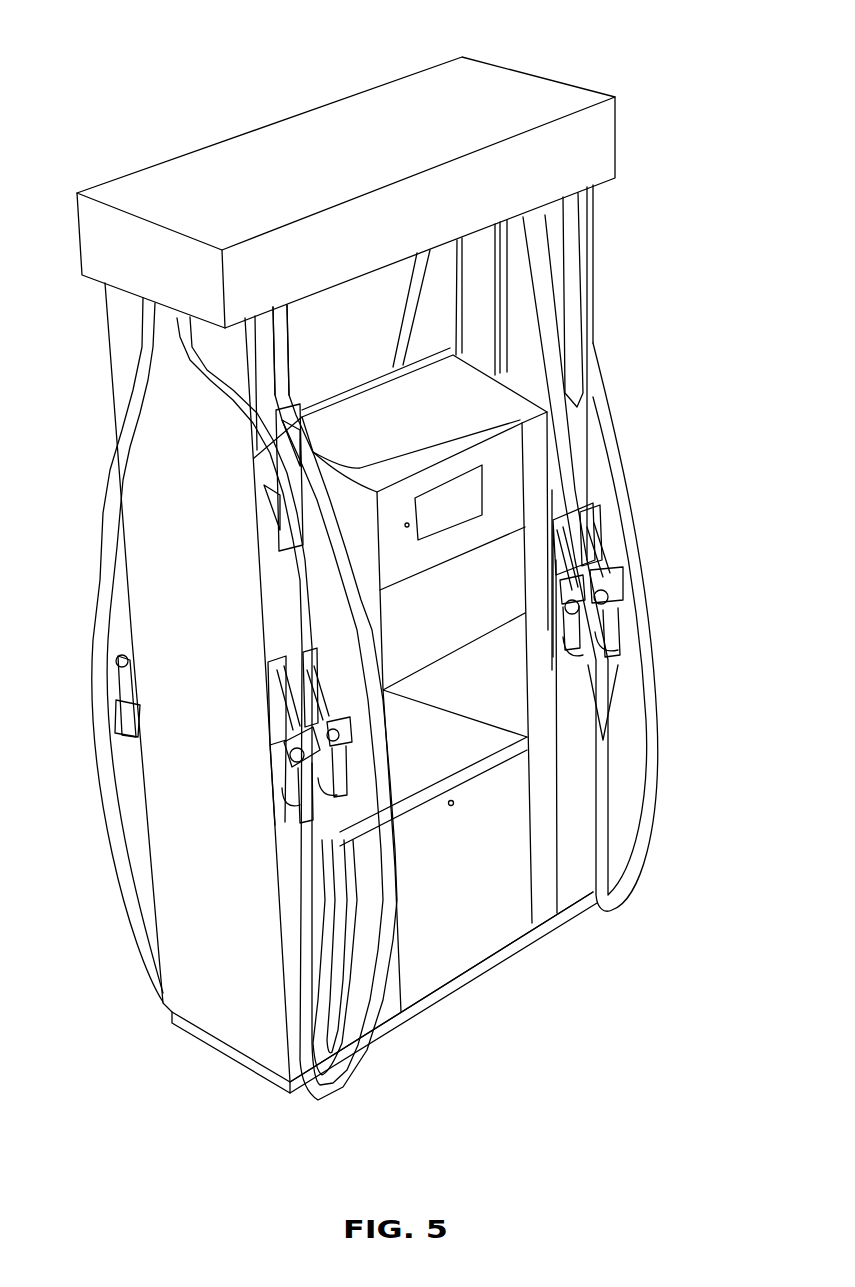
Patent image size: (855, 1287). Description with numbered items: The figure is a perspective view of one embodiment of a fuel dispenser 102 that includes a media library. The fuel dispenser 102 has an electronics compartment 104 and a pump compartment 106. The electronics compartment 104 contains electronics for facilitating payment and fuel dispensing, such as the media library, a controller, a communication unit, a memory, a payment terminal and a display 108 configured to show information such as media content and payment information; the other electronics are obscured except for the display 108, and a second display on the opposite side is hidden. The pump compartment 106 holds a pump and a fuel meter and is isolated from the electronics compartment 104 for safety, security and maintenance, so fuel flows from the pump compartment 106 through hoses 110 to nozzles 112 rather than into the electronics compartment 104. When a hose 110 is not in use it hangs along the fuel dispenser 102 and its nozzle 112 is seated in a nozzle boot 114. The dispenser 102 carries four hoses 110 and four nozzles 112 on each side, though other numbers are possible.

The fuel dispenser 102 is at (706, 68).
The electronics compartment 104 is at (365, 410).
The pump compartment 106 is at (458, 950).
The display 108 is at (470, 497).
The hose 110 is at (613, 405).
The nozzle 112 is at (617, 590).
The nozzle boot 114 is at (593, 508).